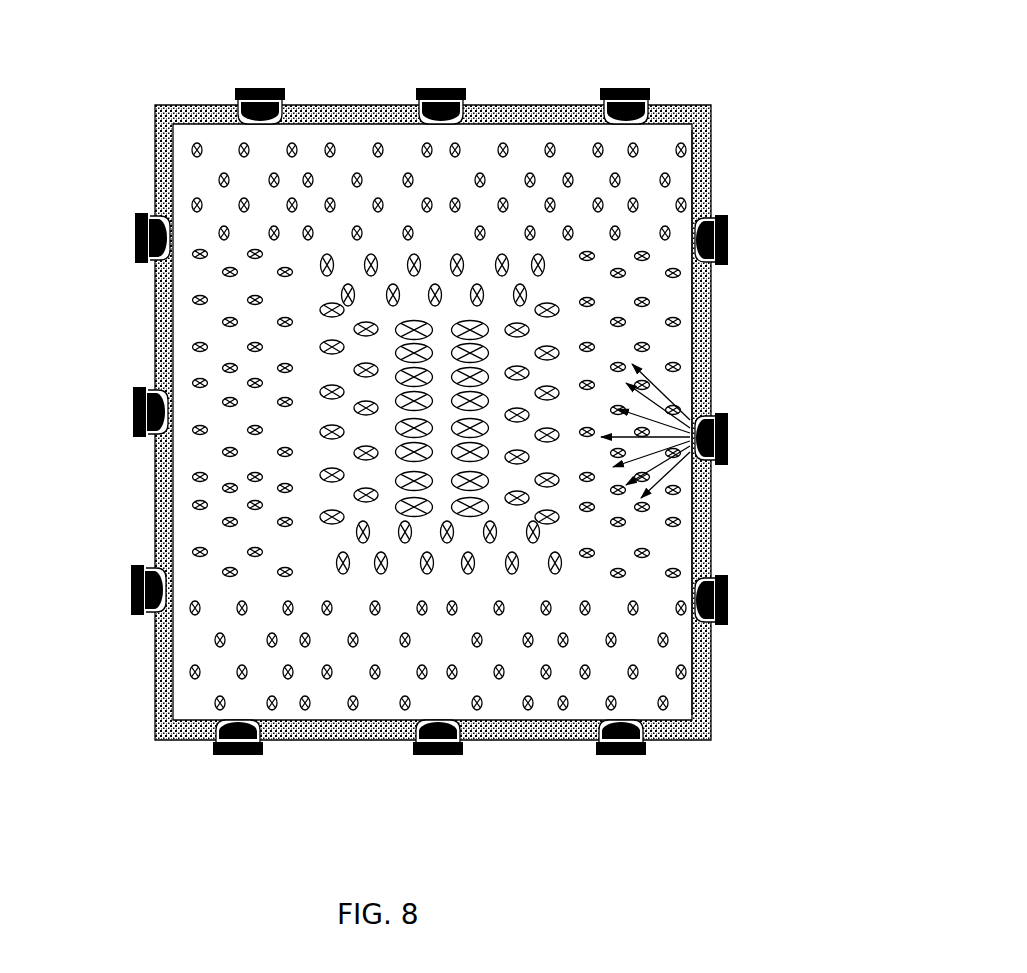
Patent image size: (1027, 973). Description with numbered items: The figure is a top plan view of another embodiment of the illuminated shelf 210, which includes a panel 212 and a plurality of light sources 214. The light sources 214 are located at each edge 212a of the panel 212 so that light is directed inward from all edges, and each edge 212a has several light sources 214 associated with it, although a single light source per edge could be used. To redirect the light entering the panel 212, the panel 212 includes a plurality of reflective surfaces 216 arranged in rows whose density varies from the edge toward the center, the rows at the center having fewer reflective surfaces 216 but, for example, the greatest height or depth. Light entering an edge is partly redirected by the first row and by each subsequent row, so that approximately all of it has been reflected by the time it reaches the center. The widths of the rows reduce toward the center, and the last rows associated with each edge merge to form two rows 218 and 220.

The shelf 210 is at (466, 441).
The panel 212 is at (535, 372).
The edge 212a is at (693, 178).
The light sources 214 is at (433, 85).
The reflective surfaces 216 is at (690, 653).
The row 218 is at (400, 510).
The row 220 is at (462, 512).